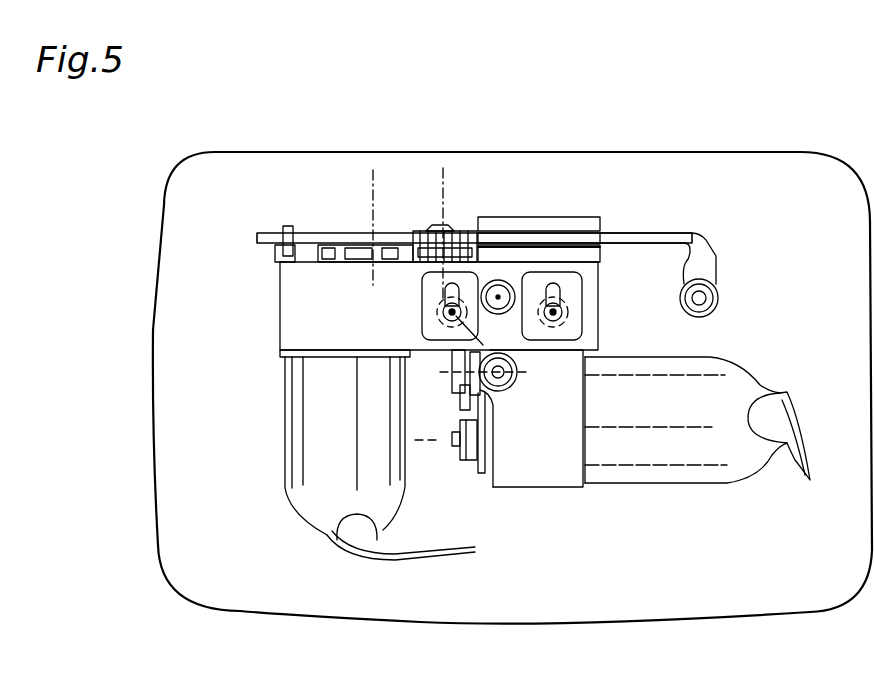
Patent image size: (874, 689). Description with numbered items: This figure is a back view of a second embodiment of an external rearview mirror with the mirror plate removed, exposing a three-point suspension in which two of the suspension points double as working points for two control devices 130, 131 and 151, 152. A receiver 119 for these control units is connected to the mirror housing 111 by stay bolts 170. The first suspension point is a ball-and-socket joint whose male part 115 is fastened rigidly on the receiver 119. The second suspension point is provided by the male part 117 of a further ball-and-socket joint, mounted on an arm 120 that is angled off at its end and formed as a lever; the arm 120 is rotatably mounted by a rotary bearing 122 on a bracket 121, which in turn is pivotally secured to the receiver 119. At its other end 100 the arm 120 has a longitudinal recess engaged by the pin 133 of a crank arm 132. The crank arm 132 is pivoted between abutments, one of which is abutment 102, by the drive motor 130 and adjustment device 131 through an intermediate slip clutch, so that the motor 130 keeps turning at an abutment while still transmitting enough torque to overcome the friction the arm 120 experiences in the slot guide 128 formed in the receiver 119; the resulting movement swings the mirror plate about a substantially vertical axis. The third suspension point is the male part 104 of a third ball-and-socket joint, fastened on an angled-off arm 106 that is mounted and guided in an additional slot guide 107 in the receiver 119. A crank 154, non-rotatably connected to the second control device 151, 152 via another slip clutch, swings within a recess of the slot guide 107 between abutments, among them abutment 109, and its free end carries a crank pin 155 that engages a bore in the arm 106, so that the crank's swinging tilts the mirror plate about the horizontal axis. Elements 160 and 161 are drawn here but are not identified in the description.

The other end 100 is at (305, 231).
The abutment 102 is at (306, 258).
The male part 104 is at (499, 372).
The angled-off arm 106 is at (468, 368).
The slot guide 107 is at (462, 350).
The abutment 109 is at (488, 395).
The mirror housing 111 is at (808, 240).
The male part 115 is at (509, 272).
The male part 117 is at (714, 297).
The receiver 119 is at (545, 240).
The arm 120 is at (651, 235).
The bracket 121 is at (437, 225).
The rotary bearing 122 is at (405, 231).
The slot guide 128 is at (590, 218).
The drive motor 130 is at (352, 452).
The adjustment device 131 is at (356, 330).
The crank arm 132 is at (343, 233).
The pin 133 is at (288, 228).
The drive motor 151 is at (668, 443).
The adjustment device 152 is at (546, 453).
The crank 154 is at (483, 476).
The crank pin 155 is at (462, 393).
The belt 160 is at (380, 560).
The hook 161 is at (800, 463).
The stay bolts 170 is at (560, 316).